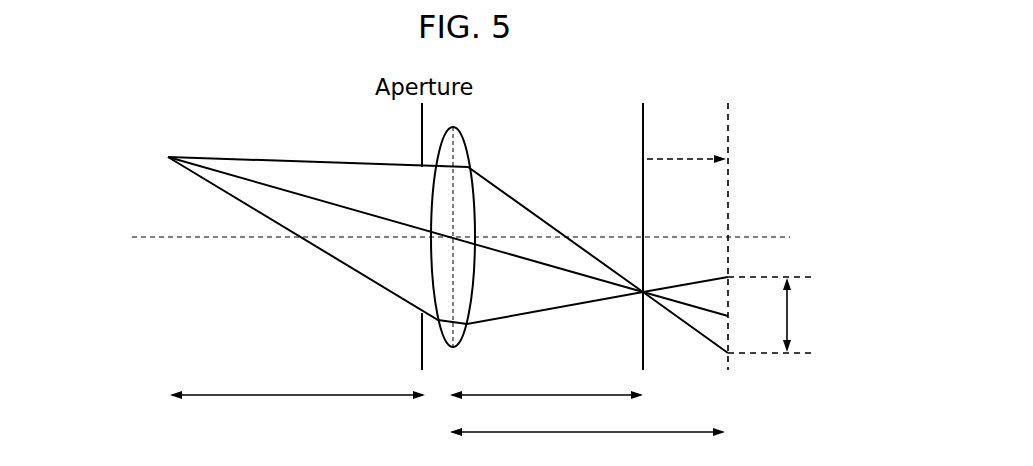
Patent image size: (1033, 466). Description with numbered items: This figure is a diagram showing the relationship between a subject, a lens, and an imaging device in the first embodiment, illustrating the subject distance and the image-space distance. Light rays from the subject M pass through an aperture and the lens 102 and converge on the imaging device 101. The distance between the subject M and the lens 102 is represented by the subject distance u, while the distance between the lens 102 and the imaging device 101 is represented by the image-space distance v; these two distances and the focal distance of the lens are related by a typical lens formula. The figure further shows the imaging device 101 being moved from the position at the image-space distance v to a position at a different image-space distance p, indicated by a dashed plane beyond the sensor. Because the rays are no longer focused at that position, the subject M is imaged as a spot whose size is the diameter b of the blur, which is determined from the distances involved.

The imaging device 101 is at (643, 118).
The lens 102 is at (465, 140).
The subject M is at (385, 247).
The diameter of a blur b is at (770, 315).
The subject distance u is at (297, 381).
The image-space distance v is at (546, 381).
The image-space distance p is at (587, 442).